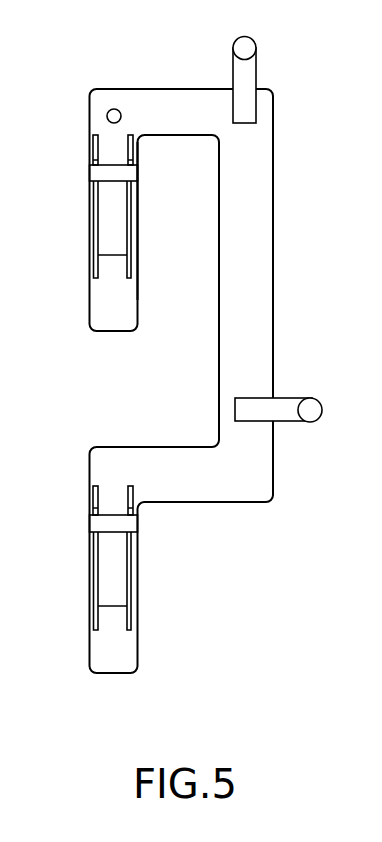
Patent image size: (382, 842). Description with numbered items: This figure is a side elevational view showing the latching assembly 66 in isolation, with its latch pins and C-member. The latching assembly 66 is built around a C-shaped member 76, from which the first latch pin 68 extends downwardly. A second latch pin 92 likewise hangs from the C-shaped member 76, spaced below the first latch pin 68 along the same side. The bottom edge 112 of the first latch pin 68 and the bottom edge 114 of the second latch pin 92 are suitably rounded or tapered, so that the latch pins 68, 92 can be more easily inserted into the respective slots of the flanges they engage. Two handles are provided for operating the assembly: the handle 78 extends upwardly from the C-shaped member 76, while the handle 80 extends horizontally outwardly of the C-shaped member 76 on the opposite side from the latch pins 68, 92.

The latching assembly 66 is at (262, 172).
The first latch pin 68 is at (95, 305).
The C-shaped member 76 is at (262, 237).
The handle 78 is at (257, 64).
The handle 80 is at (288, 398).
The second latch pin 92 is at (92, 636).
The bottom edge 112 is at (115, 335).
The bottom edge 114 is at (113, 677).